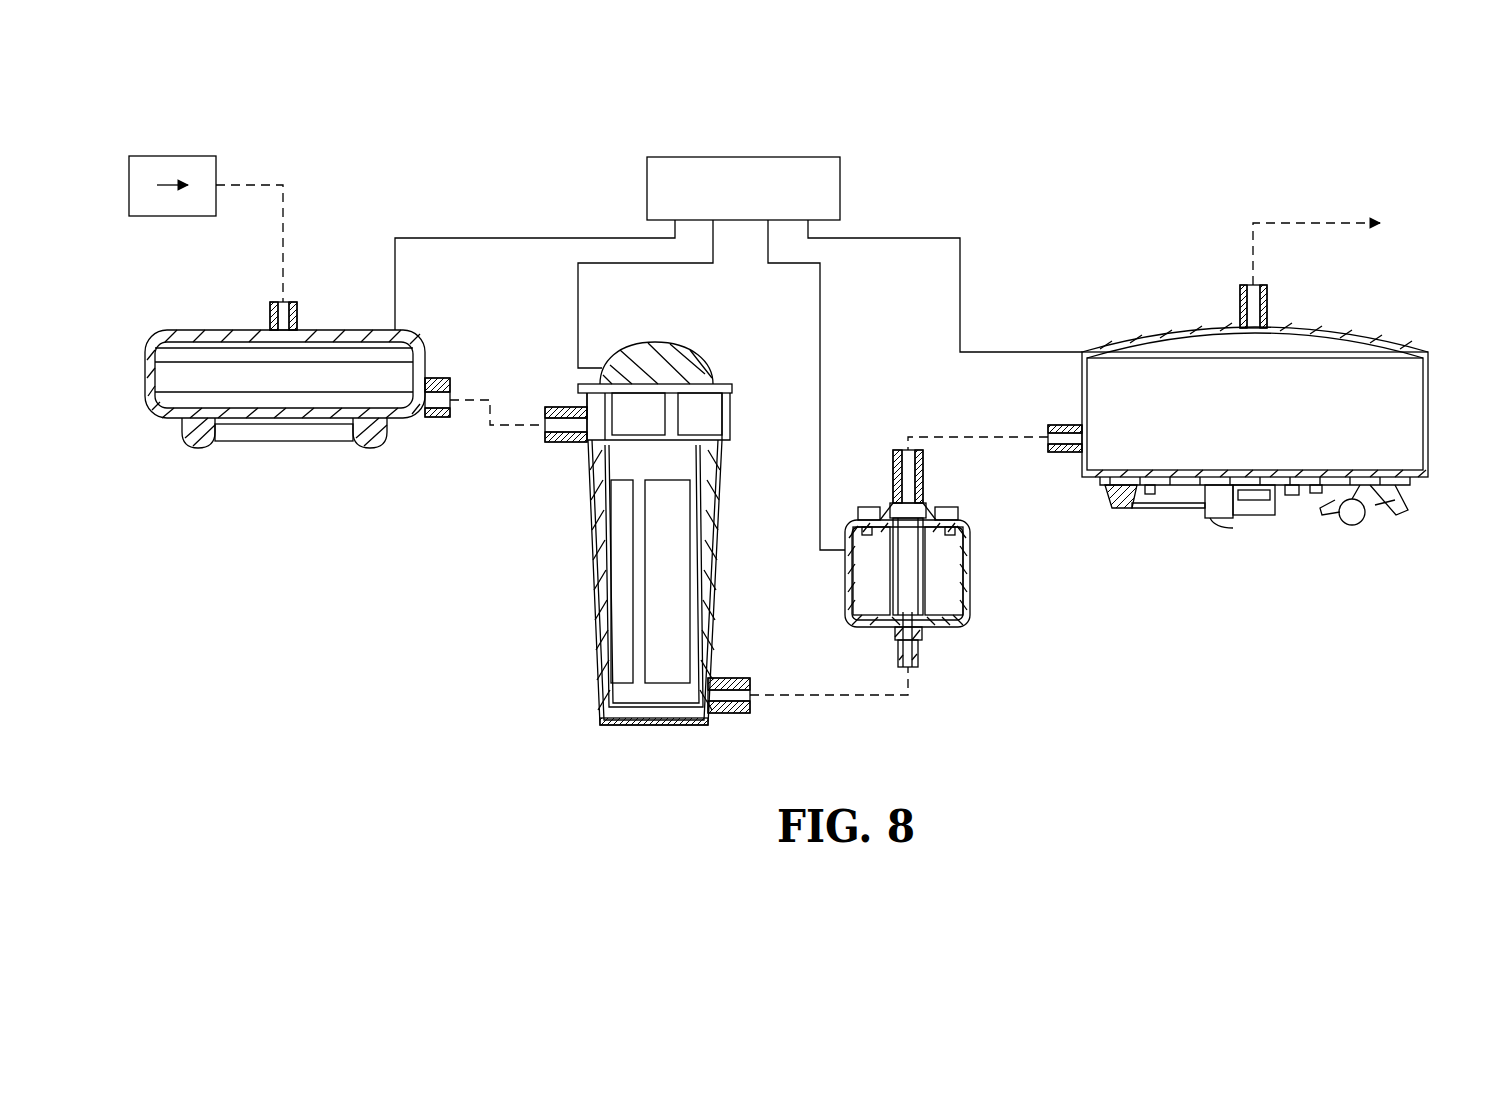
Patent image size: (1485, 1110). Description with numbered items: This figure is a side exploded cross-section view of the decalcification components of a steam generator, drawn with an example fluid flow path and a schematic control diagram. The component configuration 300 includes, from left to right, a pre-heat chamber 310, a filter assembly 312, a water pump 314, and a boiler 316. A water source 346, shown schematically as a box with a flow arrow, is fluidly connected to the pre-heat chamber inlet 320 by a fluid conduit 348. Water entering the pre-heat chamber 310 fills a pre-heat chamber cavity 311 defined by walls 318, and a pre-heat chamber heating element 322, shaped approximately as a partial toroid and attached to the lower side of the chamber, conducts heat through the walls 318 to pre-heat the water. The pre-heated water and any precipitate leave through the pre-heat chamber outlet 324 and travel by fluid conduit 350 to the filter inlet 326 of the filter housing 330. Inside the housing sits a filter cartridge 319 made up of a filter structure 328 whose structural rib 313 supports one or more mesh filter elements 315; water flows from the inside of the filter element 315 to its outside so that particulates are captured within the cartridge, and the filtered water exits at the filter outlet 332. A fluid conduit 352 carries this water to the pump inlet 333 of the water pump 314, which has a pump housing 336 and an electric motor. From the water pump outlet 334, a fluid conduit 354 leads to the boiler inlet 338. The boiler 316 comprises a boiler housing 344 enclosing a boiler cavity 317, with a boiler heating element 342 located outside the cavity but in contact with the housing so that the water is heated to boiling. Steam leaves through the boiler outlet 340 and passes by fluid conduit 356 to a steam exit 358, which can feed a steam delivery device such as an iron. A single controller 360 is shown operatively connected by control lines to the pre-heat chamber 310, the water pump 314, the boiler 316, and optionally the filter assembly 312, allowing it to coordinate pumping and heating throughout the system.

The component configuration 300 is at (268, 133).
The pre-heat chamber 310 is at (232, 298).
The pre-heat chamber cavity 311 is at (328, 388).
The filter assembly 312 is at (591, 728).
The structural rib 313 is at (637, 631).
The water pump 314 is at (968, 637).
The filter element 315 is at (672, 578).
The boiler 316 is at (1329, 305).
The boiler cavity 317 is at (1112, 382).
The walls 318 is at (146, 355).
The filter cartridge 319 is at (715, 356).
The pre-heat chamber inlet 320 is at (286, 302).
The pre-heat chamber heating element 322 is at (198, 440).
The pre-heat chamber outlet 324 is at (452, 394).
The filter inlet 326 is at (545, 426).
The filter structure 328 is at (655, 352).
The filter housing 330 is at (590, 522).
The filter outlet 332 is at (757, 702).
The pump inlet 333 is at (904, 668).
The water pump outlet 334 is at (905, 450).
The pump housing 336 is at (970, 575).
The boiler inlet 338 is at (1048, 436).
The boiler outlet 340 is at (1252, 285).
The boiler heating element 342 is at (1380, 492).
The boiler housing 344 is at (1430, 356).
The water source 346 is at (129, 186).
The fluid conduit 348 is at (288, 205).
The fluid conduit 350 is at (500, 424).
The fluid conduit 352 is at (835, 696).
The fluid conduit 354 is at (960, 436).
The fluid conduit 356 is at (1275, 222).
The steam exit 358 is at (1360, 221).
The controller 360 is at (743, 188).